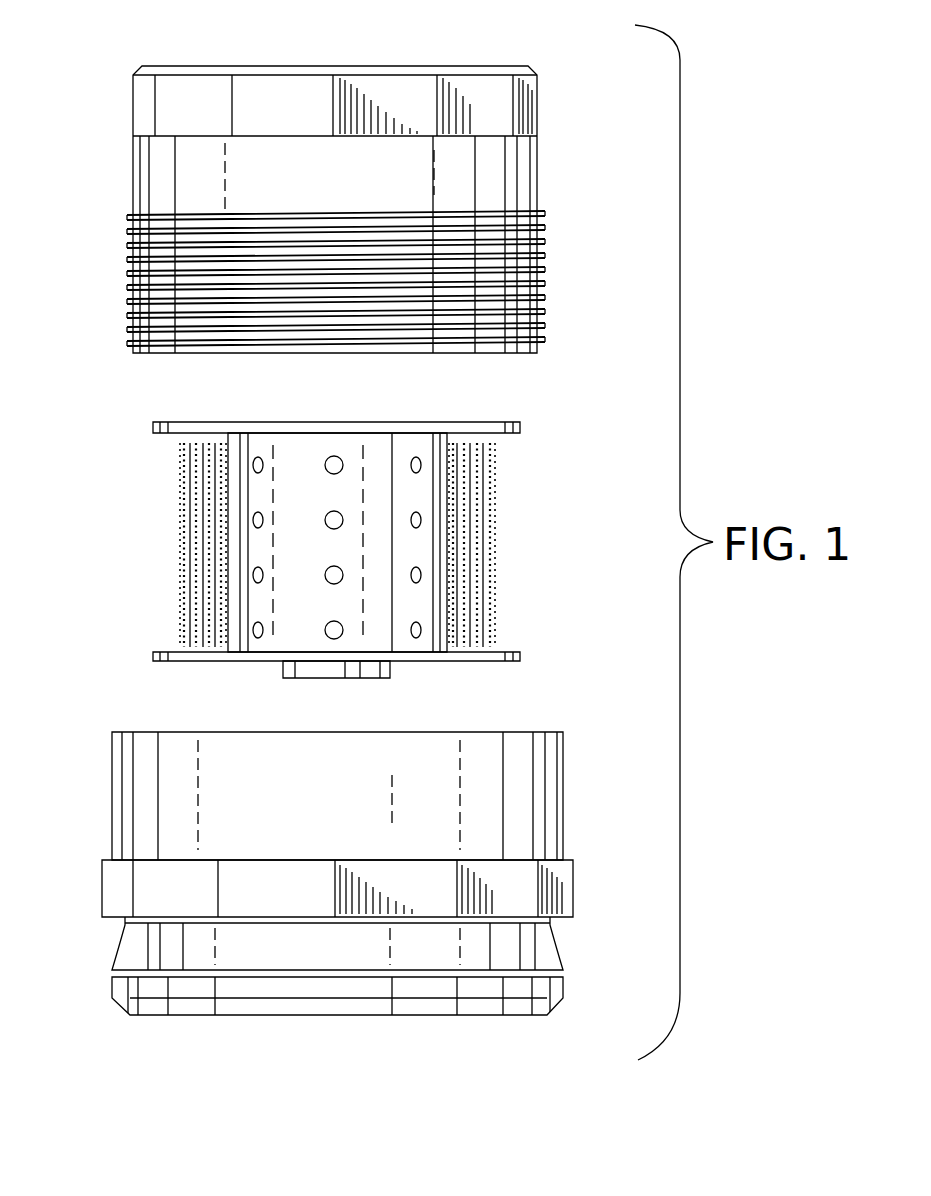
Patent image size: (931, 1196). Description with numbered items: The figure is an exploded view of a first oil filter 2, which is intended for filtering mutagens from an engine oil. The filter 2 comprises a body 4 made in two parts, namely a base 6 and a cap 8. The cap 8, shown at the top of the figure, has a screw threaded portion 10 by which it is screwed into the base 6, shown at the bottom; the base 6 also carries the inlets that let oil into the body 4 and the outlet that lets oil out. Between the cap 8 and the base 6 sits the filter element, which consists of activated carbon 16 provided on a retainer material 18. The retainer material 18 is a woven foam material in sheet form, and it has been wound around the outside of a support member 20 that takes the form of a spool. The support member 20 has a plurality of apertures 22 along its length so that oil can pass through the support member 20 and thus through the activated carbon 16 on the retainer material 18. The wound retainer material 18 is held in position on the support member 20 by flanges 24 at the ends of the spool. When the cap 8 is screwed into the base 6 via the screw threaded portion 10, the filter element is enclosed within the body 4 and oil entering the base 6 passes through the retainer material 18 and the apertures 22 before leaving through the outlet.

The filter 2 is at (586, 158).
The body 4 is at (100, 250).
The base 6 is at (108, 793).
The cap 8 is at (130, 165).
The screw threaded portion 10 is at (545, 283).
The activated carbon 16 is at (180, 503).
The retainer material 18 is at (180, 610).
The support member 20 is at (500, 663).
The apertures 22 is at (333, 518).
The flanges 24 is at (160, 422).